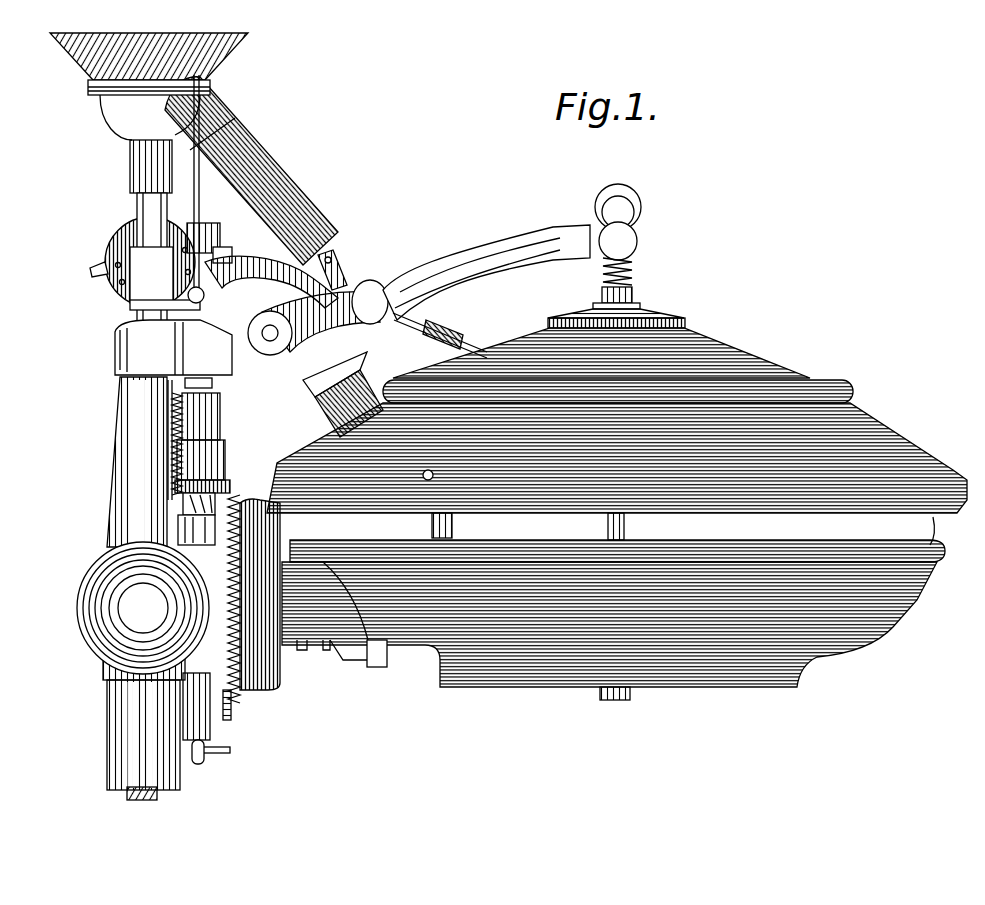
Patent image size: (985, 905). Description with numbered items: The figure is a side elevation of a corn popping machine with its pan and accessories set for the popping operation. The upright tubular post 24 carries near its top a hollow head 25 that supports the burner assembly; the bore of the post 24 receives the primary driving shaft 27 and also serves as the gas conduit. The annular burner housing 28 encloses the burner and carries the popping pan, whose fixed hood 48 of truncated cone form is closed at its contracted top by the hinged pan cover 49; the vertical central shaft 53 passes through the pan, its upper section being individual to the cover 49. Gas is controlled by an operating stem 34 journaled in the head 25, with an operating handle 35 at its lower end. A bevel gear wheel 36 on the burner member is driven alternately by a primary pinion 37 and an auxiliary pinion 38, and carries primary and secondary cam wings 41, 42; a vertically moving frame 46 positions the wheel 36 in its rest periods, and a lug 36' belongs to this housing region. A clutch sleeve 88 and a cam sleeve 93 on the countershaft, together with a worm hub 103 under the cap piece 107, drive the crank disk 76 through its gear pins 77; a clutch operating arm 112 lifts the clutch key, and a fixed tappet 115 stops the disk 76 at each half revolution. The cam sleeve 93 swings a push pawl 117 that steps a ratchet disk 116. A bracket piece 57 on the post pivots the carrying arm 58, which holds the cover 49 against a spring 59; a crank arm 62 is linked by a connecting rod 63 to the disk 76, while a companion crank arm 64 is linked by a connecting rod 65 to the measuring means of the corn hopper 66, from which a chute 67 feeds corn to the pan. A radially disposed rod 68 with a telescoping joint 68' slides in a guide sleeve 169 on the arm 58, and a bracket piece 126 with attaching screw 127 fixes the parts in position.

The upright tubular post 24 is at (114, 437).
The hollow head 25 is at (80, 596).
The primary driving shaft 27 is at (130, 797).
The burner housing 28 is at (868, 635).
The operating stem 34 is at (202, 765).
The operating handle 35 is at (228, 753).
The bevel gear wheel 36 is at (270, 599).
The housing lug 36' is at (299, 667).
The primary pinion 37 is at (181, 507).
The auxiliary pinion 38 is at (178, 522).
The primary cam wing 41 is at (231, 495).
The secondary cam wing 42 is at (232, 713).
The vertically moving frame 46 is at (208, 728).
The hood 48 is at (873, 433).
The pan cover 49 is at (730, 352).
The central shaft 53 is at (626, 523).
The bracket piece 57 is at (113, 352).
The carrying arm 58 is at (487, 255).
The spring 59 is at (634, 268).
The crank arm 62 is at (346, 281).
The connecting rod 63 is at (322, 254).
The companion crank arm 64 is at (253, 273).
The connecting rod 65 is at (201, 187).
The corn hopper 66 is at (149, 178).
The chute 67 is at (262, 202).
The radially disposed rod 68 is at (448, 335).
The telescoping joint 68' is at (448, 320).
The crank disk 76 is at (110, 236).
The gear pins 77 is at (118, 272).
The clutch sleeve 88 is at (228, 463).
The cam sleeve 93 is at (214, 381).
The worm hub 103 is at (165, 278).
The cap piece 107 is at (210, 236).
The clutch operating arm 112 is at (231, 256).
The fixed tappet 115 is at (90, 269).
The ratchet disk 116 is at (171, 447).
The push pawl 117 is at (170, 400).
The bracket piece 126 is at (347, 668).
The attaching screw 127 is at (376, 668).
The pivot lug 169 is at (314, 323).